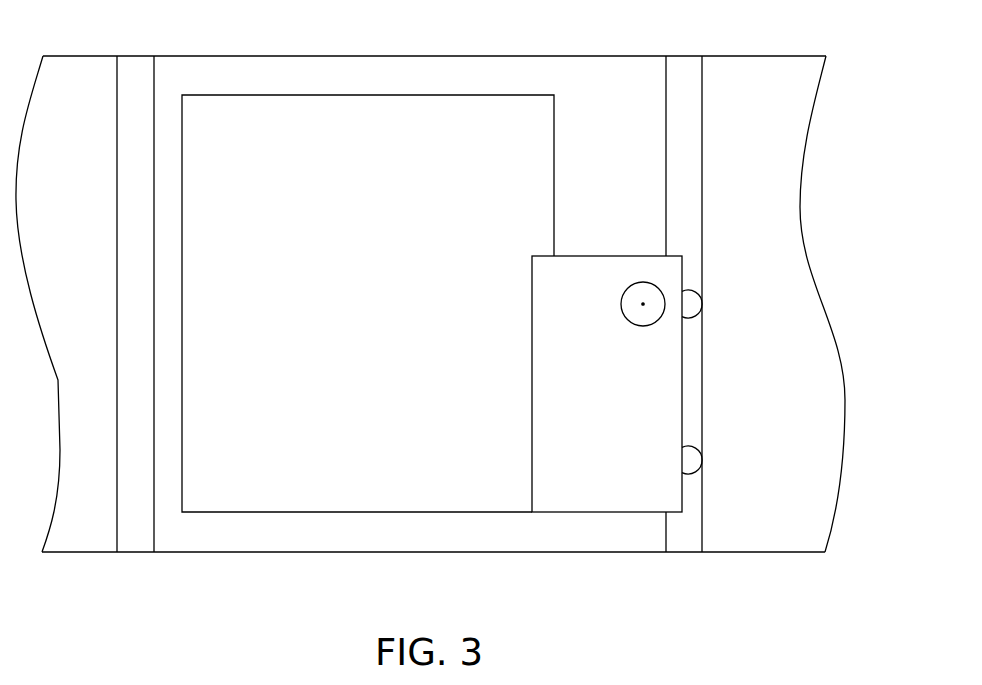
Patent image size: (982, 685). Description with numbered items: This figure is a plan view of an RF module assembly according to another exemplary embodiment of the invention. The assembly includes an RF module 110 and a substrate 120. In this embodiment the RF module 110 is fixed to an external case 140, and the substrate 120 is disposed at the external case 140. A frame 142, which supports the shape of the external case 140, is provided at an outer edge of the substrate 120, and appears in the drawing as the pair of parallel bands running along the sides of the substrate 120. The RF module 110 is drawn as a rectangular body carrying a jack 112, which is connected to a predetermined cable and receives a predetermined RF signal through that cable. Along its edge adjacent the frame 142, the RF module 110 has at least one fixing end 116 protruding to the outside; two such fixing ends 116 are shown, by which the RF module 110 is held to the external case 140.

The RF module 110 is at (593, 498).
The jack 112 is at (646, 292).
The fixing end 116 is at (690, 303).
The substrate 120 is at (307, 497).
The external case 140 is at (755, 522).
The frame 142 is at (692, 162).